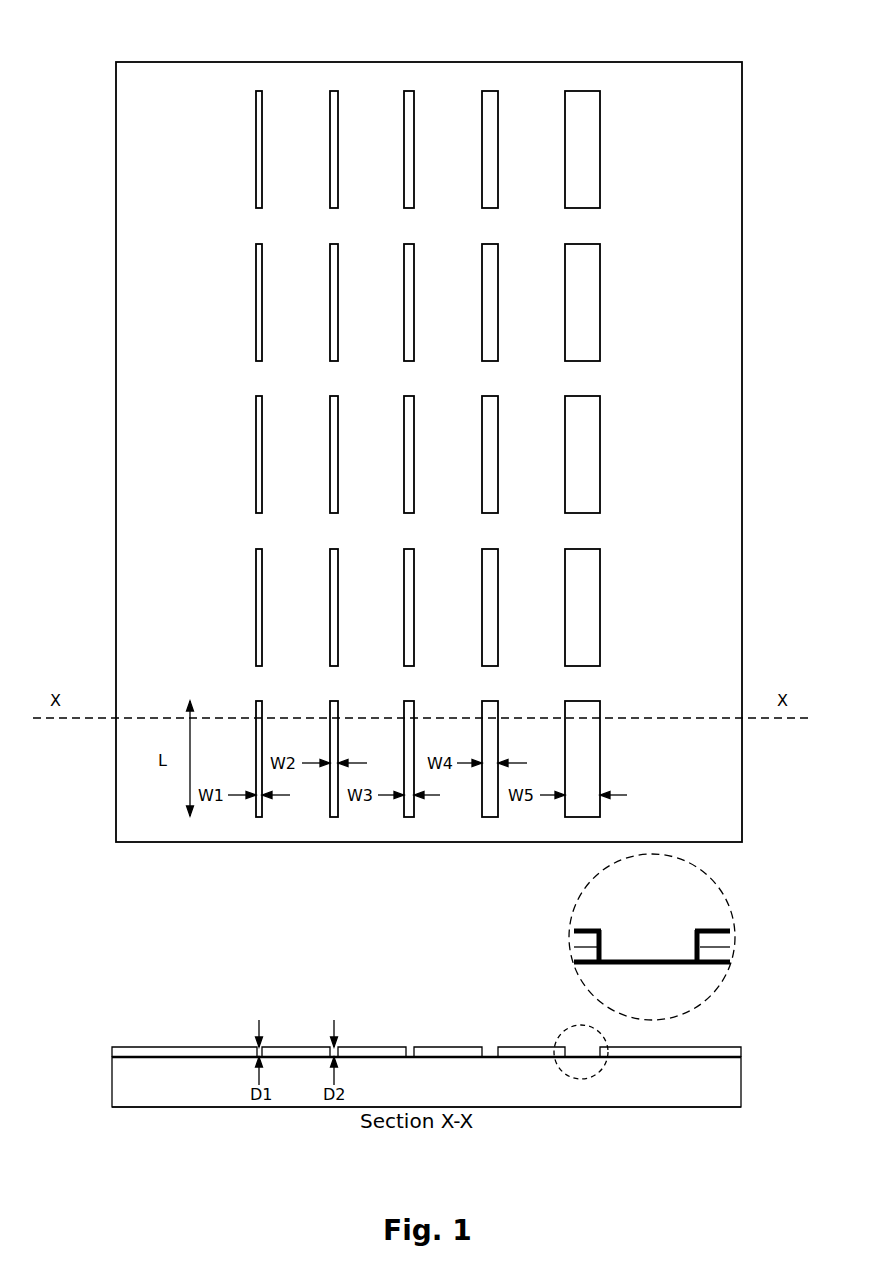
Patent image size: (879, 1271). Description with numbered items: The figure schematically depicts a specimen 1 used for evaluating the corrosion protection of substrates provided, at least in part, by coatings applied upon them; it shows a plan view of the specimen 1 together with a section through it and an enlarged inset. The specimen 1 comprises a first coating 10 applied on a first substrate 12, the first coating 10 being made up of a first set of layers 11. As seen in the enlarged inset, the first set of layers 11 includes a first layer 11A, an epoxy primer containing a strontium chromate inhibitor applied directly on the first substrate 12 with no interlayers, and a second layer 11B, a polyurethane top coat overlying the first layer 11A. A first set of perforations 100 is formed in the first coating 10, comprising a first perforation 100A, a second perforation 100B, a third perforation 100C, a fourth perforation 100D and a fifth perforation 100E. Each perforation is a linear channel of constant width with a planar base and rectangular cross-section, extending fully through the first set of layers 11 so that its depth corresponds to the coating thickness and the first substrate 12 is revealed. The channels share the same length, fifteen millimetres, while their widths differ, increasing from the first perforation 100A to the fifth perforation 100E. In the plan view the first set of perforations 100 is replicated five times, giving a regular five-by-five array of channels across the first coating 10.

The specimen 1 is at (459, 584).
The first coating 10 is at (725, 798).
The first set of perforations 100 is at (363, 516).
The first perforation 100A is at (257, 815).
The second perforation 100B is at (328, 815).
The third perforation 100C is at (405, 815).
The fourth perforation 100D is at (482, 815).
The fifth perforation 100E is at (565, 815).
The first set of layers 11 is at (651, 937).
The first layer 11A is at (578, 953).
The second layer 11B is at (577, 943).
The first substrate 12 is at (728, 1107).